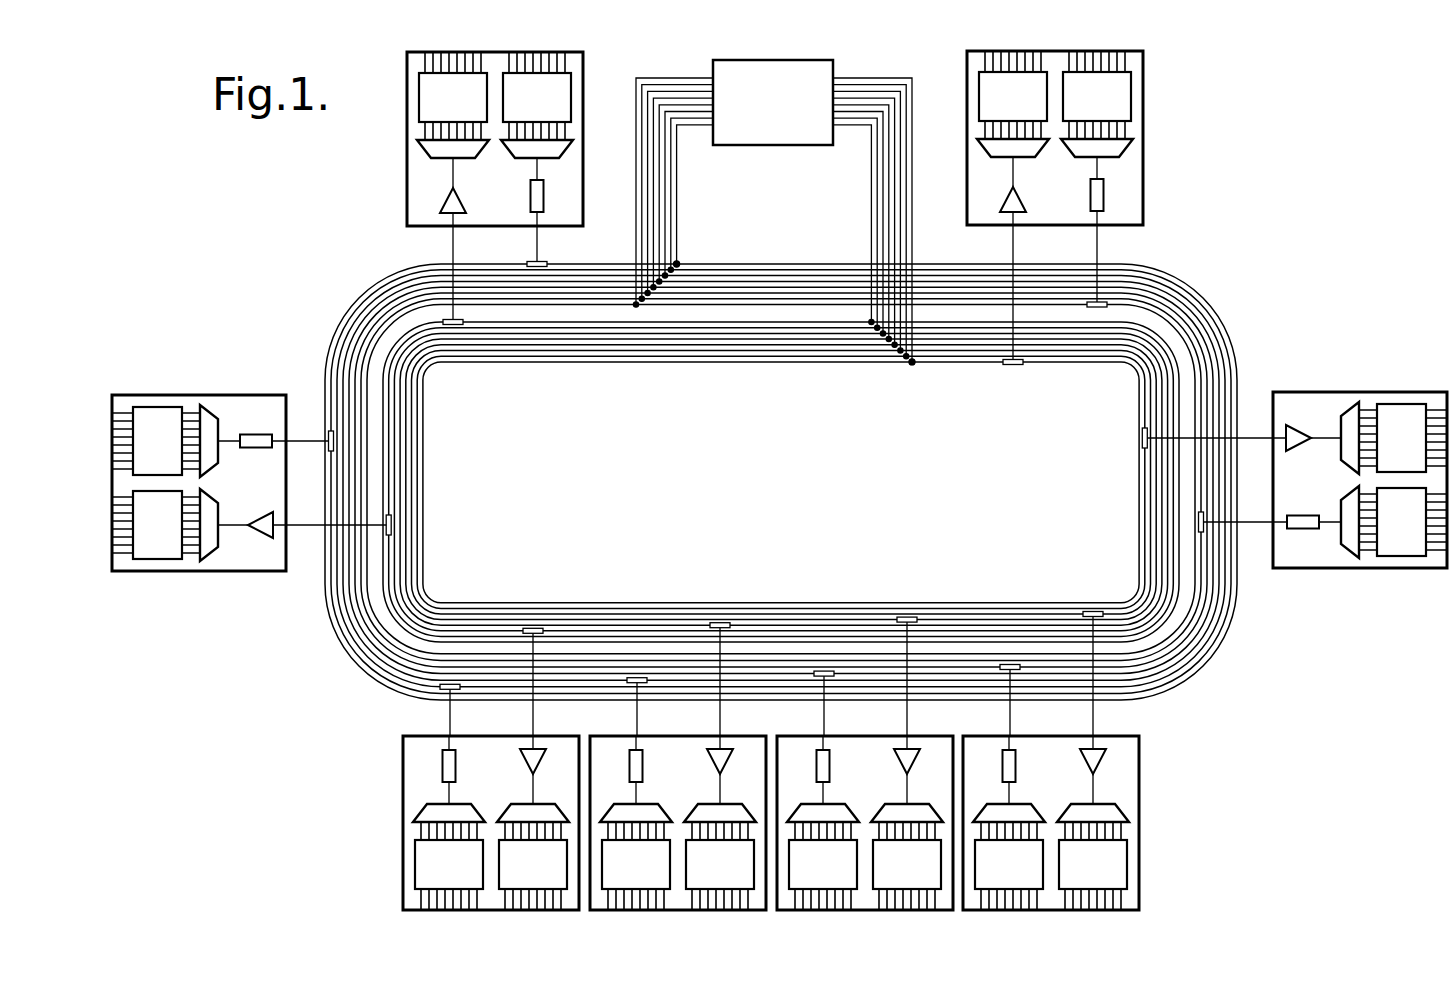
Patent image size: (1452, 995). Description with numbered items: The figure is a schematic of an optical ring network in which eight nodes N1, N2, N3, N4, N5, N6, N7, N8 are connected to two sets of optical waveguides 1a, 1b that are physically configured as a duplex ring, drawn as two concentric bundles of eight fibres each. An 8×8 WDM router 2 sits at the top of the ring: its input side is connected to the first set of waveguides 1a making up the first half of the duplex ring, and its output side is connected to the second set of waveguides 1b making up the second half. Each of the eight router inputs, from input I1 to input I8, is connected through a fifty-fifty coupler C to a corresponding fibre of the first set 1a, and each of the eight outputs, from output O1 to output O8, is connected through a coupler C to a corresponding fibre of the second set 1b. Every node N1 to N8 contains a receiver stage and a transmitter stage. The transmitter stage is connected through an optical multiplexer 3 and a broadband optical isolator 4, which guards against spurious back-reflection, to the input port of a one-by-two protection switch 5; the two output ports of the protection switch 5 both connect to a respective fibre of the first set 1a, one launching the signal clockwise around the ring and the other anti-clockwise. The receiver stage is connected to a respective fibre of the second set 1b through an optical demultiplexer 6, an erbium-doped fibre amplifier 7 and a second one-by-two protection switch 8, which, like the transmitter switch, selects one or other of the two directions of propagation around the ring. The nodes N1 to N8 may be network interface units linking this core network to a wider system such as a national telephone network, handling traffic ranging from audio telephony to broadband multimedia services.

The optical waveguides 1a is at (1190, 305).
The optical waveguides 1b is at (1145, 355).
The 8×8 WDM router 2 is at (790, 60).
The optical multiplexer 3 is at (571, 148).
The broadband optical isolator 4 is at (546, 205).
The 1×2 protection switch 5 is at (537, 267).
The optical demultiplexer 6 is at (416, 149).
The erbium-doped fibre amplifier 7 is at (440, 205).
The 1×2 protection switch 8 is at (453, 325).
The node N1 is at (482, 148).
The node N2 is at (1143, 95).
The node N3 is at (1385, 392).
The node N4 is at (1140, 760).
The node N5 is at (930, 736).
The node N6 is at (733, 736).
The node N7 is at (403, 763).
The node N8 is at (188, 395).
The router input I1 is at (713, 78).
The router input I8 is at (713, 125).
The router output O1 is at (833, 78).
The router output O8 is at (833, 125).
The 50:50 coupler C is at (678, 264).